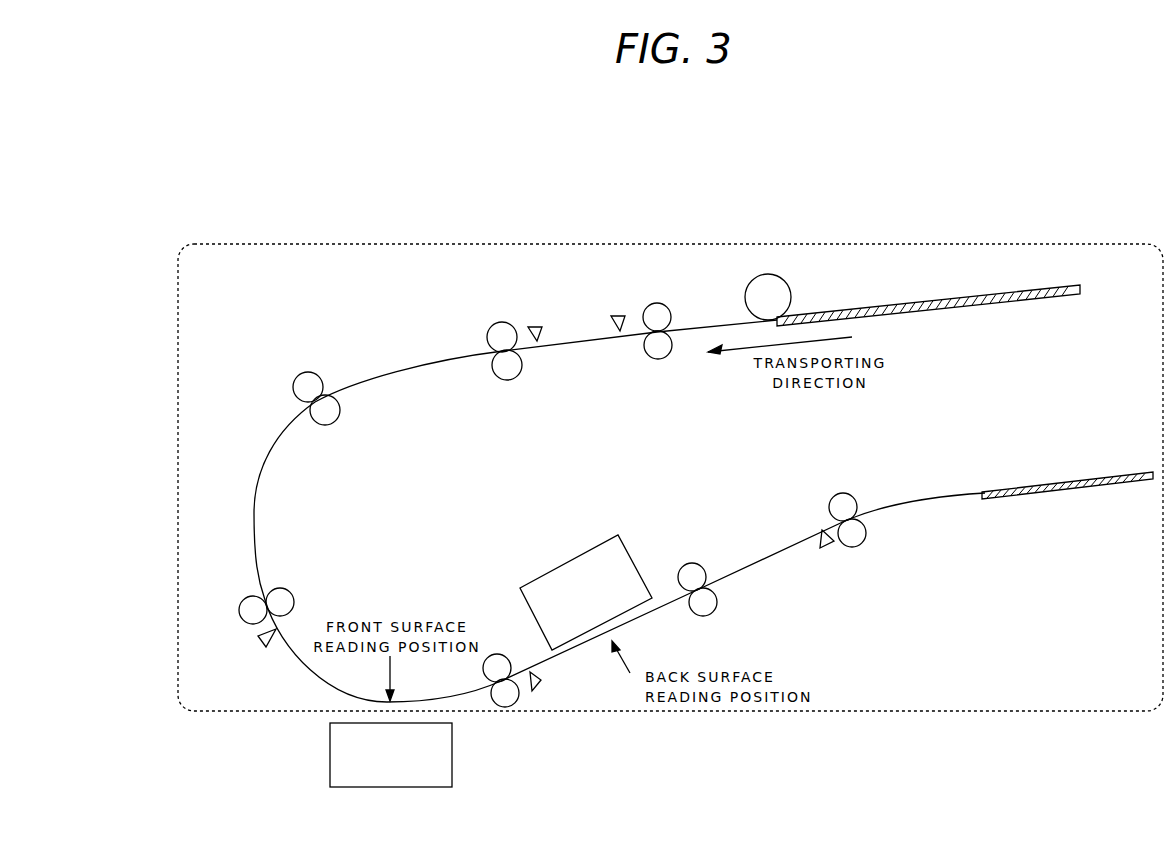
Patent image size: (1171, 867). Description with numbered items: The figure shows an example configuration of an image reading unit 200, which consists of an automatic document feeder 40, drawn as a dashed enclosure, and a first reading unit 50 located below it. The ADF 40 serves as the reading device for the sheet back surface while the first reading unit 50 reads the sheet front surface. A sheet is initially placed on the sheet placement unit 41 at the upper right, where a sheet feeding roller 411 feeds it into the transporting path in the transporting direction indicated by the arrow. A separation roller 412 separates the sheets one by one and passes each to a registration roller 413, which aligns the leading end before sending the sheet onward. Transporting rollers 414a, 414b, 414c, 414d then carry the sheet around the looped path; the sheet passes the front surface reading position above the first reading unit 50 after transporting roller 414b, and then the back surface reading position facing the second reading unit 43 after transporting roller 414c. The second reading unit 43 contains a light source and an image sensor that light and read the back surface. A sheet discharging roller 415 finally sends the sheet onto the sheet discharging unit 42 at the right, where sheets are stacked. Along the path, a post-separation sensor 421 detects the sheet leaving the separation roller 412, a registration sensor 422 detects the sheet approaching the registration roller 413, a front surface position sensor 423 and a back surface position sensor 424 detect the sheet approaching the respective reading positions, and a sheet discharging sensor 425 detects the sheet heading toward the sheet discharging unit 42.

The image reading unit 200 is at (1069, 157).
The automatic document feeder 40 is at (870, 245).
The sheet placement unit 41 is at (1022, 298).
The sheet discharging unit 42 is at (1058, 496).
The second reading unit 43 is at (569, 561).
The first reading unit 50 is at (330, 756).
The sheet feeding roller 411 is at (791, 290).
The separation roller 412 is at (659, 360).
The registration roller 413 is at (507, 381).
The transporting roller 414a is at (341, 412).
The transporting roller 414b is at (295, 598).
The transporting roller 414c is at (496, 654).
The transporting roller 414d is at (688, 563).
The sheet discharging roller 415 is at (842, 493).
The post-separation sensor 421 is at (619, 315).
The registration sensor 422 is at (535, 326).
The front surface position sensor 423 is at (263, 646).
The back surface position sensor 424 is at (536, 693).
The sheet discharging sensor 425 is at (826, 550).